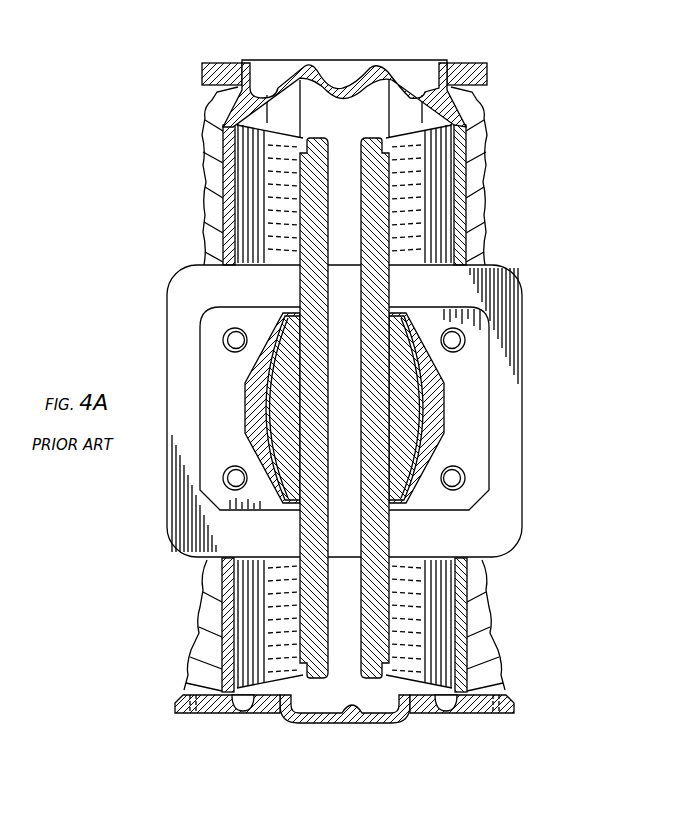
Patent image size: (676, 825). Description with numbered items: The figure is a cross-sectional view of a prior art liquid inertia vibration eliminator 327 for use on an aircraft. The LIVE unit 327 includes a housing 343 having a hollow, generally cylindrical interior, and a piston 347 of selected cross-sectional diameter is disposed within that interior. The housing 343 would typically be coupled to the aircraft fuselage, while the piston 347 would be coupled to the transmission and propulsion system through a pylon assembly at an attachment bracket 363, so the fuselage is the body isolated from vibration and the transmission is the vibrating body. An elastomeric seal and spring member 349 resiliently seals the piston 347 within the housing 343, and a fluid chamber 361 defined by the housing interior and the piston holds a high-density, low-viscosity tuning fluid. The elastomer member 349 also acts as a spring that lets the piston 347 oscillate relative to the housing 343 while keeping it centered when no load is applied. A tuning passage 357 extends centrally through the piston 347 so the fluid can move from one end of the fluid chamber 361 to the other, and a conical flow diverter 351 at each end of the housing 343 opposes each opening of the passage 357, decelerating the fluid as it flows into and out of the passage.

The liquid inertia vibration eliminator 327 is at (137, 253).
The housing 343 is at (467, 710).
The piston 347 is at (317, 137).
The elastomeric seal and spring member 349 is at (242, 190).
The conical flow diverter 351 is at (317, 82).
The tuning port or passage 357 is at (352, 137).
The fluid chamber 361 is at (292, 102).
The attachment bracket 363 is at (213, 333).